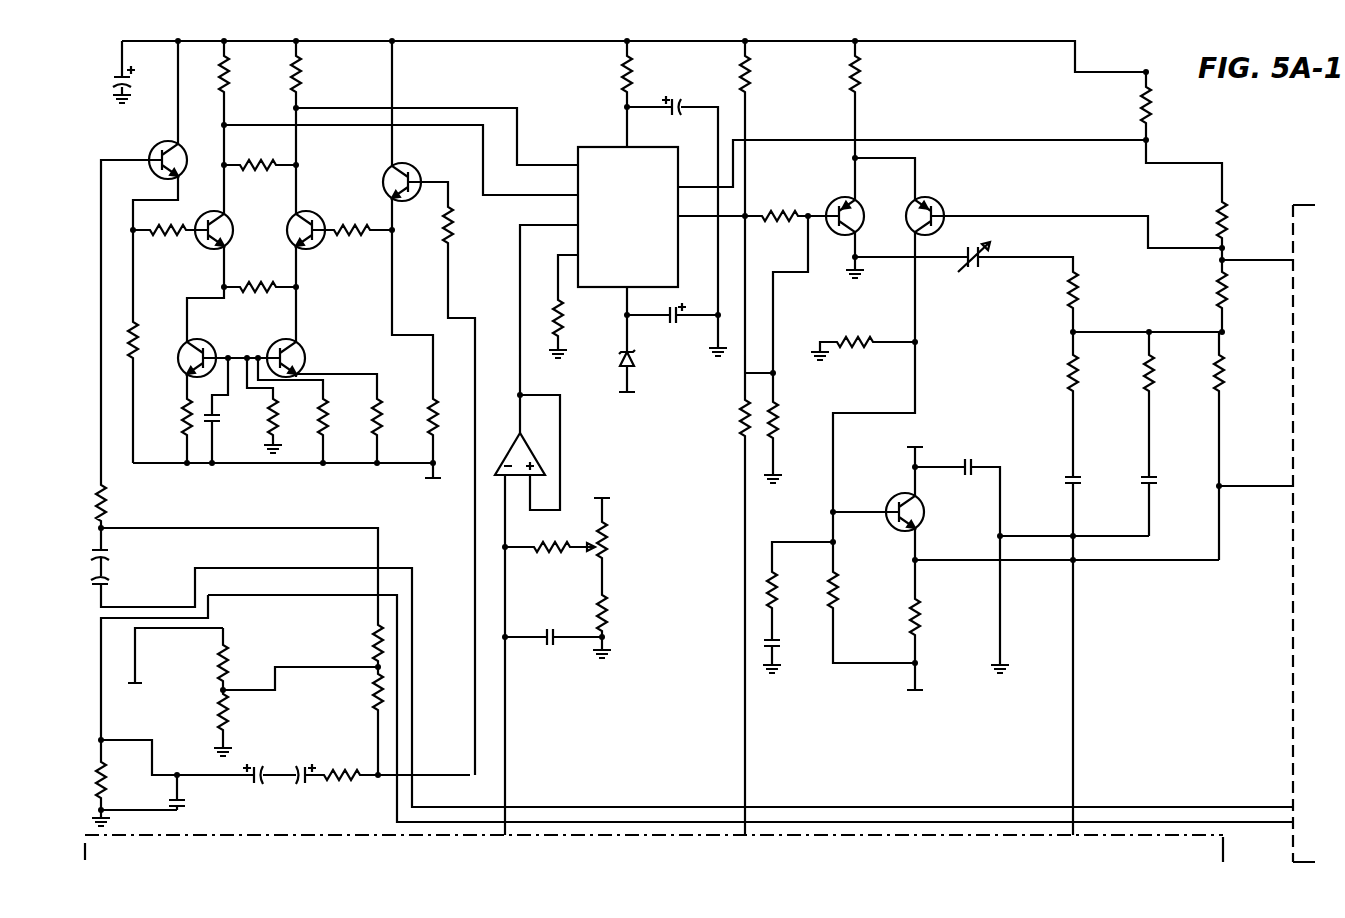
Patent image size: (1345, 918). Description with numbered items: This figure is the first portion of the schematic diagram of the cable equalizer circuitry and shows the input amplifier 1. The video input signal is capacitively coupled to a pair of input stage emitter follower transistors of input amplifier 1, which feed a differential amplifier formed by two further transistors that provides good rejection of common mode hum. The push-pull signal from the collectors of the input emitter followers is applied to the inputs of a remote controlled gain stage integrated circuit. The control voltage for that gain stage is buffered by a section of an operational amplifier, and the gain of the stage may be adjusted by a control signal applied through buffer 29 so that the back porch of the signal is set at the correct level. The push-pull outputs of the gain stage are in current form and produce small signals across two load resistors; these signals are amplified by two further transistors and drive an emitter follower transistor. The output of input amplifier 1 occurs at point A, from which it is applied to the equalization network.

The input amplifier 1 is at (469, 83).
The buffer 29 is at (504, 463).
The point A is at (1073, 562).